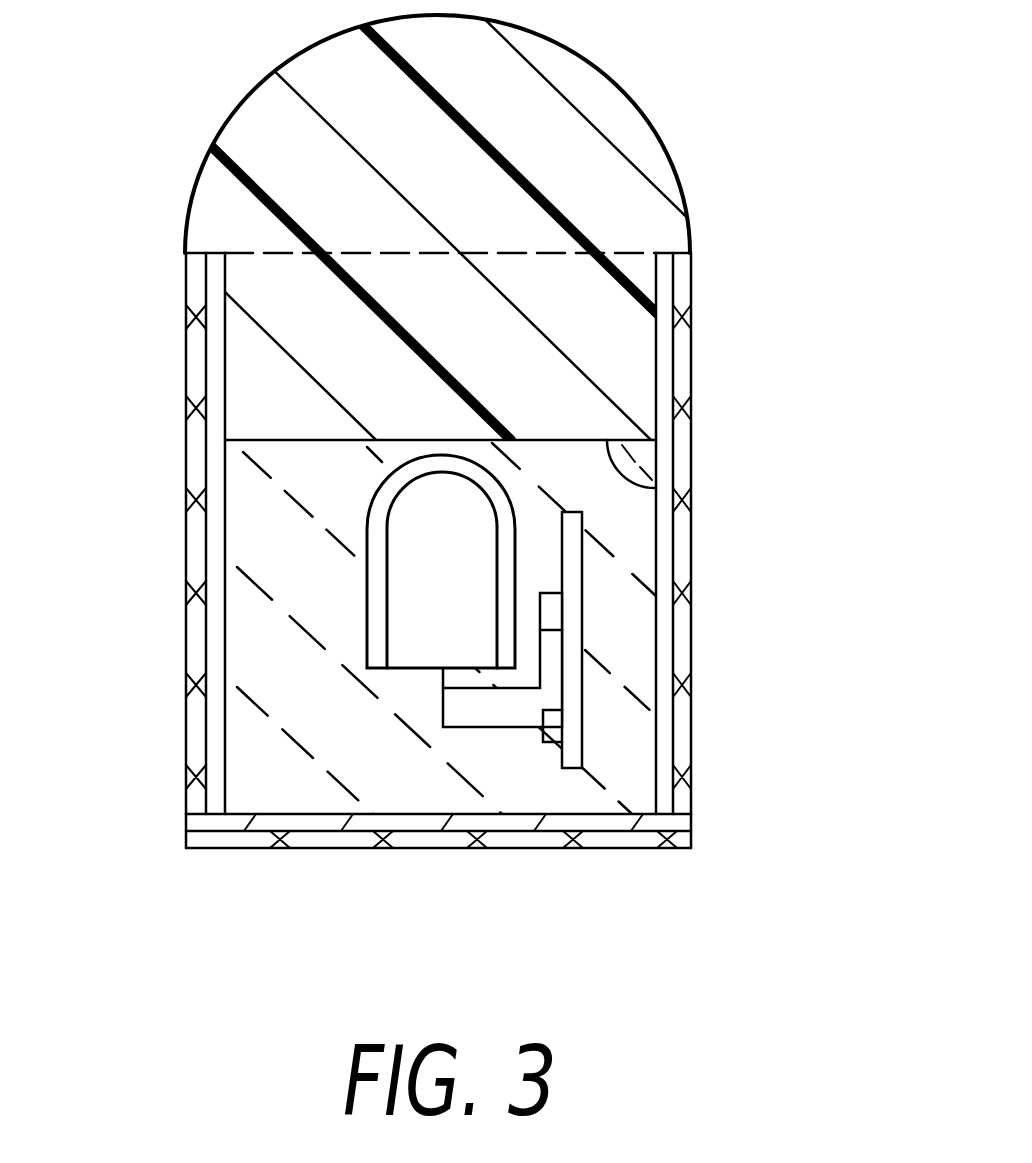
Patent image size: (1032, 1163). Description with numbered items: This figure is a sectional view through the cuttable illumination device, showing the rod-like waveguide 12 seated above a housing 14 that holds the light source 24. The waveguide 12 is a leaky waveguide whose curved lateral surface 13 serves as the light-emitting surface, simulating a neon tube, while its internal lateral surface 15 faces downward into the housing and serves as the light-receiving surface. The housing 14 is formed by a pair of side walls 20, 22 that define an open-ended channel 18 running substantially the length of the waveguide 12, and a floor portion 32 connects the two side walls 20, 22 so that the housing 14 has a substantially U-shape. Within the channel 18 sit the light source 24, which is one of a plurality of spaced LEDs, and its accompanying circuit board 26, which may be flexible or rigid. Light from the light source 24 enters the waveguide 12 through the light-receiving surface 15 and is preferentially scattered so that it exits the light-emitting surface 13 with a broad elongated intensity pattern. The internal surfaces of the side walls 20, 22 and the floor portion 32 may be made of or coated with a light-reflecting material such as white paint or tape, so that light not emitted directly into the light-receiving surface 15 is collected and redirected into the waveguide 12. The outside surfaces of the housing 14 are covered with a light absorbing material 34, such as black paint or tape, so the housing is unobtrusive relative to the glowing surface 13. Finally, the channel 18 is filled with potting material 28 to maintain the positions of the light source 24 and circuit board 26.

The waveguide 12 is at (688, 220).
The curved lateral surface 13 is at (648, 118).
The housing 14 is at (714, 449).
The internal lateral surface 15 is at (656, 490).
The open-ended channel 18 is at (277, 778).
The side wall 20 is at (186, 589).
The side wall 22 is at (693, 573).
The light source 24 is at (503, 479).
The circuit board 26 is at (573, 718).
The potting material 28 is at (357, 745).
The floor portion 32 is at (593, 810).
The light absorbing material 34 is at (623, 848).